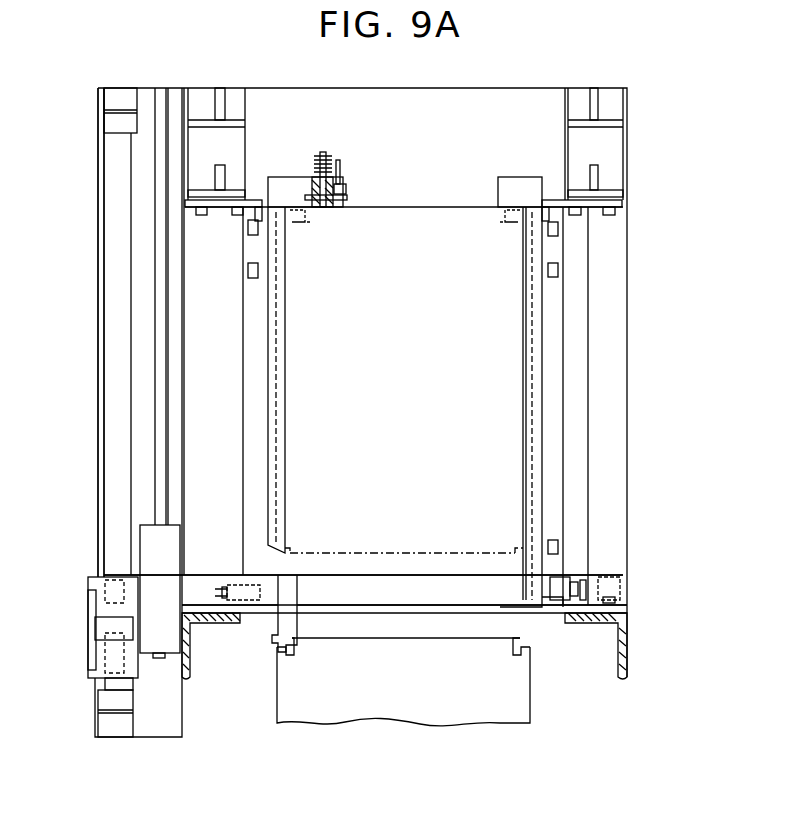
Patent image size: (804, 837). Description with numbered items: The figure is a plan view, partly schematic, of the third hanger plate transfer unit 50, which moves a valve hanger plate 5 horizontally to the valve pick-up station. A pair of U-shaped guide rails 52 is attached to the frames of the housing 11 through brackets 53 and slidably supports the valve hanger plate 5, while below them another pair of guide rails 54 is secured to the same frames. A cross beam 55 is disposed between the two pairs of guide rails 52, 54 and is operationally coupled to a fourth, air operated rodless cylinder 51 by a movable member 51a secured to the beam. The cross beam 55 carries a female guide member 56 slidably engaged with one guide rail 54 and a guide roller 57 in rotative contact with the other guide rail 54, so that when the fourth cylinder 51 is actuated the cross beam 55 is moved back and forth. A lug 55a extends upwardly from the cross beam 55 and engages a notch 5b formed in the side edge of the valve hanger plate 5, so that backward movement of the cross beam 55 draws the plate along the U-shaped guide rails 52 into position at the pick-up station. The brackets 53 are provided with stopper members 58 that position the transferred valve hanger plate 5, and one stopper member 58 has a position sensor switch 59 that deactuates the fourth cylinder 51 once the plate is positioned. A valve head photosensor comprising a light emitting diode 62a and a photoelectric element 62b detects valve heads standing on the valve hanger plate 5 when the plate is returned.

The valve hanger plate 5 is at (445, 215).
The notch 5b is at (280, 650).
The housing 11 is at (616, 270).
The third hanger plate transfer unit 50 is at (638, 352).
The fourth air operated rodless cylinder 51 is at (100, 543).
The movable member 51a is at (97, 657).
The U-shaped guide rail 52 is at (272, 448).
The bracket 53 is at (218, 213).
The guide rail 54 is at (155, 400).
The cross beam 55 is at (265, 602).
The lug 55a is at (298, 622).
The female guide member 56 is at (170, 660).
The guide roller 57 is at (580, 577).
The stopper member 58 is at (308, 200).
The position sensor switch 59 is at (346, 170).
The light emitting diode 62a is at (612, 579).
The photoelectric element 62b is at (236, 585).